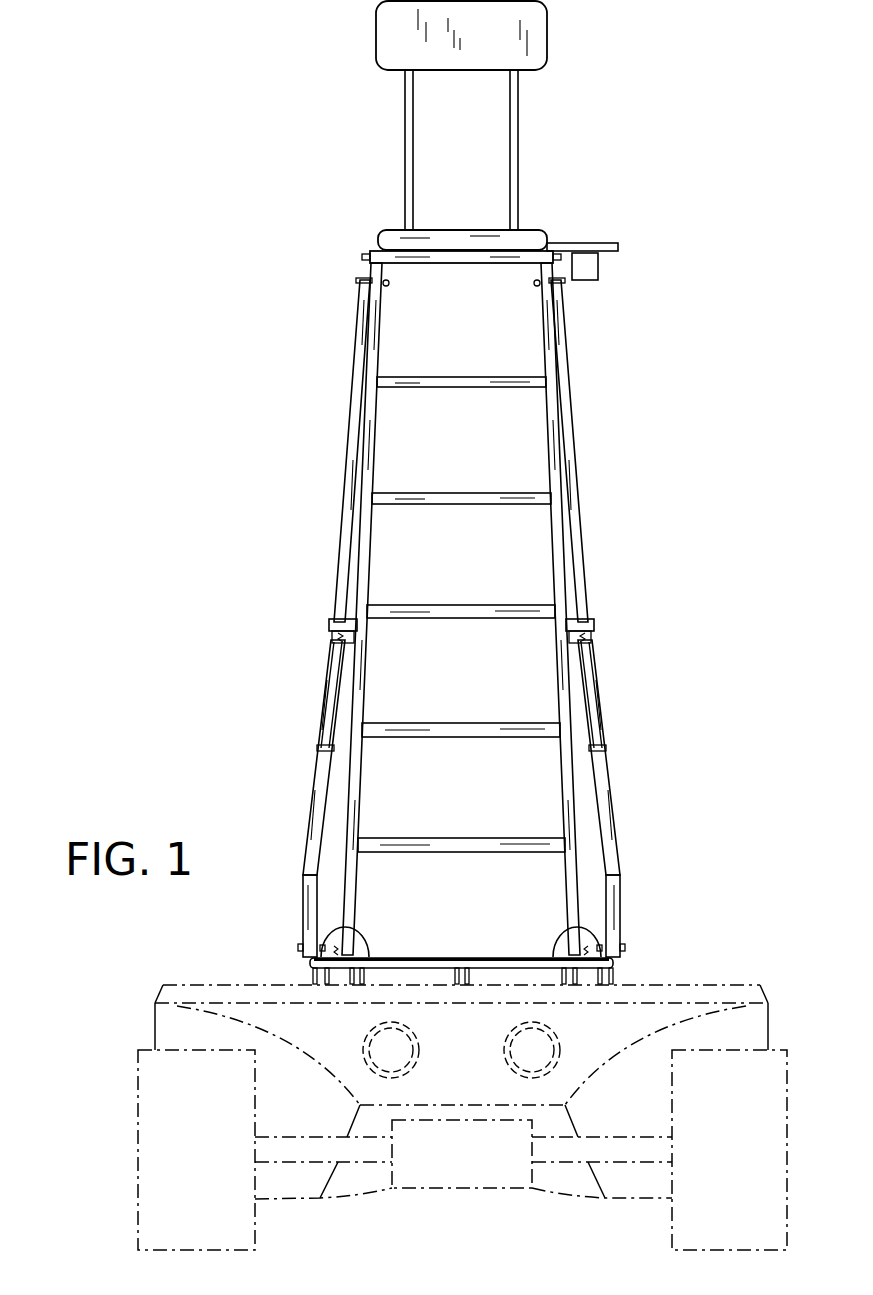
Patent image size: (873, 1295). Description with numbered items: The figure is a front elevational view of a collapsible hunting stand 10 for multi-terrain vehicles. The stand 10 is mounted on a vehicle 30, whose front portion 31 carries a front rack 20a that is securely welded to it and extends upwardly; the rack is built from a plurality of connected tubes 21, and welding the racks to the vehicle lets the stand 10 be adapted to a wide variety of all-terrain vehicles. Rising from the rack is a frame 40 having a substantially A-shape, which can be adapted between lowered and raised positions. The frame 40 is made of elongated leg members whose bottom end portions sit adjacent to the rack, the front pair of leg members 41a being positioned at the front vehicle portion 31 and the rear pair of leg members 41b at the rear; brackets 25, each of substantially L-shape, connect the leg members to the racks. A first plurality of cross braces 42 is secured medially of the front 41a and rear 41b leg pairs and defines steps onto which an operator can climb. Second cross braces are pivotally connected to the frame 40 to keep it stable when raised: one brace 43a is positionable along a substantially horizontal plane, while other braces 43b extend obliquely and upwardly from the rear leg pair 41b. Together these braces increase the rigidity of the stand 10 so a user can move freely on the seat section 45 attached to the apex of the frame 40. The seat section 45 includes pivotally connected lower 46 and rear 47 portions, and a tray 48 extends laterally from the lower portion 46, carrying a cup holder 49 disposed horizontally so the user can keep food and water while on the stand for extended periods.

The collapsible hunting stand 10 is at (172, 112).
The front rack 20a is at (459, 958).
The connected tubes 21 is at (303, 895).
The L-shaped brackets 25 is at (335, 926).
The vehicle 30 is at (220, 1008).
The front portion of the vehicle 31 is at (700, 1007).
The frame 40 is at (583, 507).
The front pair of leg members 41a is at (363, 787).
The rear pair of leg members 41b is at (311, 810).
The first cross braces 42 is at (400, 605).
The horizontal second cross brace 43a is at (345, 618).
The oblique second cross braces 43b is at (360, 325).
The seat section 45 is at (452, 230).
The lower portion of seat section 46 is at (545, 230).
The rear portion of seat section 47 is at (375, 33).
The tray 48 is at (618, 247).
The cup holder 49 is at (598, 269).